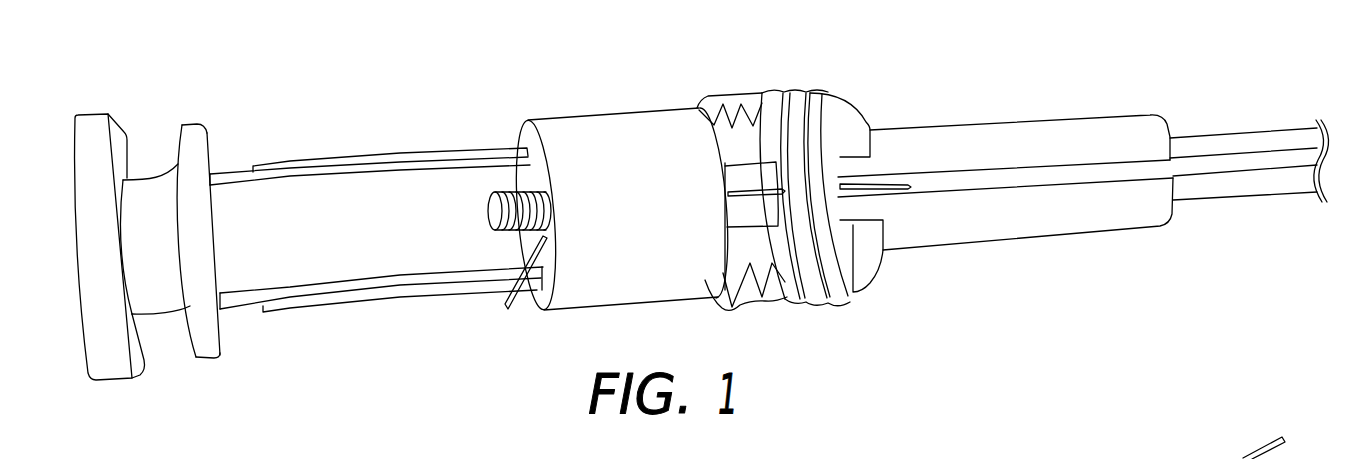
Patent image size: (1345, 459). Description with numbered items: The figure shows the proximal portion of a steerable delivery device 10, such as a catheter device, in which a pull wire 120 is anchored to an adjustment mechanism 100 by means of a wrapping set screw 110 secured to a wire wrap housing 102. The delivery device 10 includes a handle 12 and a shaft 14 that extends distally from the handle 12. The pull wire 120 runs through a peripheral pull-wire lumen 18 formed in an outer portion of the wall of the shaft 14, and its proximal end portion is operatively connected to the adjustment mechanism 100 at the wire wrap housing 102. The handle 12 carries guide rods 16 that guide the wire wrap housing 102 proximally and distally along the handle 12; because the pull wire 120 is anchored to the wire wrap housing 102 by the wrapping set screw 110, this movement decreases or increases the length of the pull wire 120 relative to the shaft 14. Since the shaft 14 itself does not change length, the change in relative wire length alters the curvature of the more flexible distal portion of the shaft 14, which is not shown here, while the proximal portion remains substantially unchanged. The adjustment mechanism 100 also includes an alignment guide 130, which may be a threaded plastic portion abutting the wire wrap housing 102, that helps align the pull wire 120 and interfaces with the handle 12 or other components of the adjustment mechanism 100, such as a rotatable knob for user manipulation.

The steerable delivery device 10 is at (200, 70).
The handle 12 is at (385, 188).
The guide rods 16 is at (343, 158).
The shaft 14 is at (1202, 187).
The peripheral pull-wire lumen 18 is at (1202, 163).
The adjustment mechanism 100 is at (630, 67).
The wire wrap housing 102 is at (585, 115).
The wrapping set screw 110 is at (505, 190).
The pull wire 120 is at (505, 306).
The alignment guide 130 is at (766, 93).